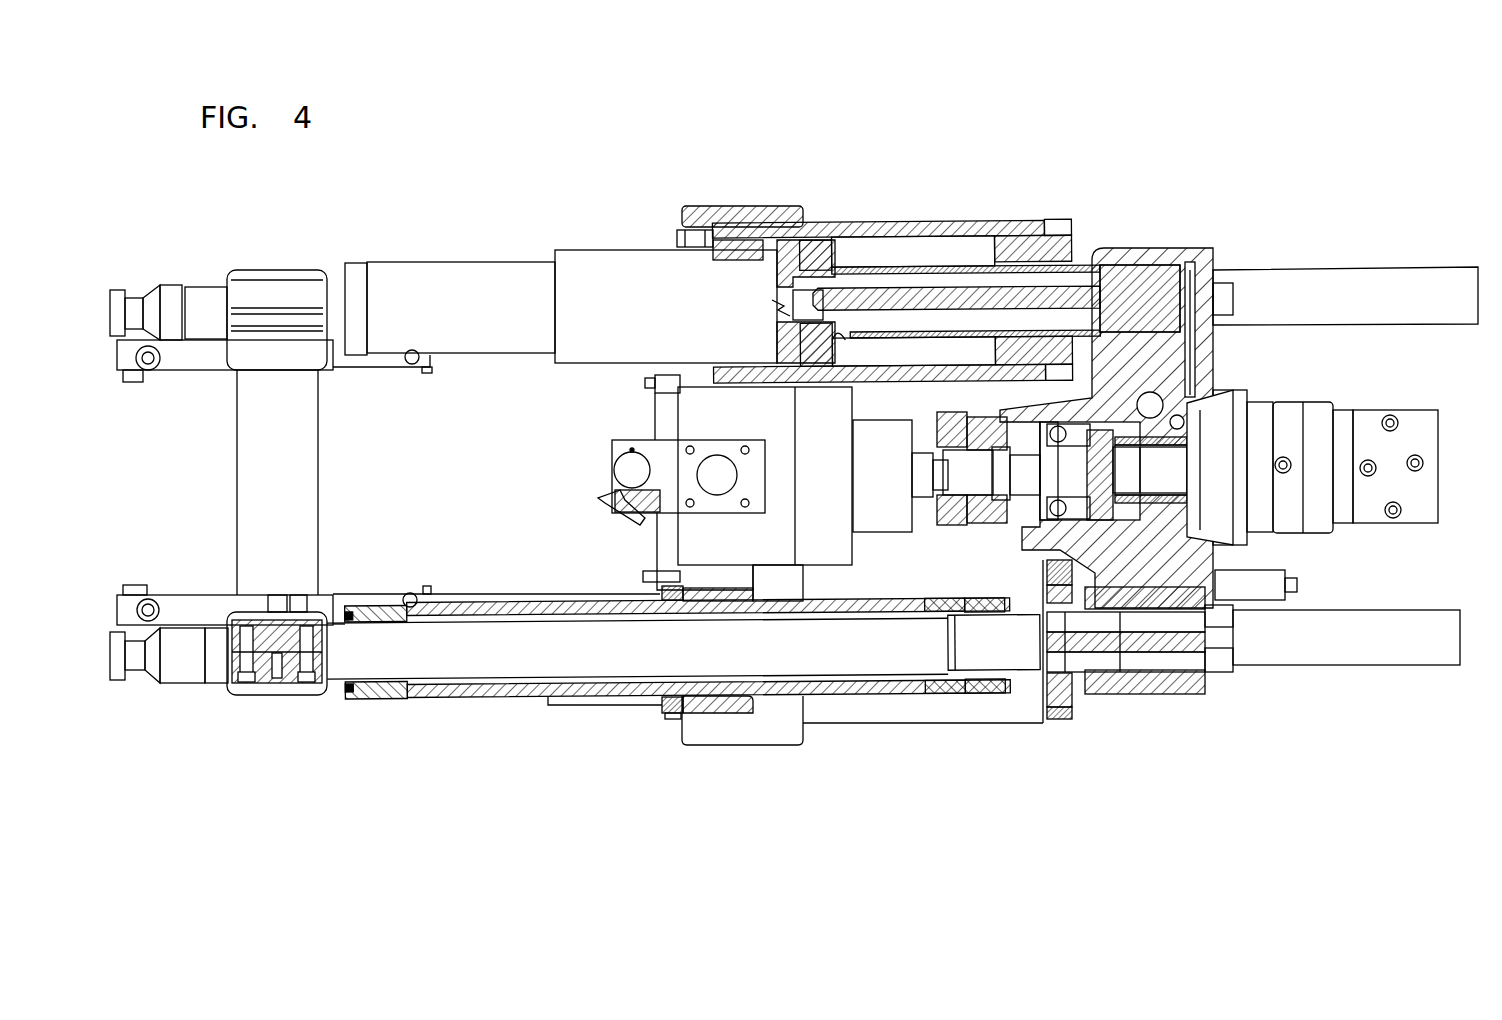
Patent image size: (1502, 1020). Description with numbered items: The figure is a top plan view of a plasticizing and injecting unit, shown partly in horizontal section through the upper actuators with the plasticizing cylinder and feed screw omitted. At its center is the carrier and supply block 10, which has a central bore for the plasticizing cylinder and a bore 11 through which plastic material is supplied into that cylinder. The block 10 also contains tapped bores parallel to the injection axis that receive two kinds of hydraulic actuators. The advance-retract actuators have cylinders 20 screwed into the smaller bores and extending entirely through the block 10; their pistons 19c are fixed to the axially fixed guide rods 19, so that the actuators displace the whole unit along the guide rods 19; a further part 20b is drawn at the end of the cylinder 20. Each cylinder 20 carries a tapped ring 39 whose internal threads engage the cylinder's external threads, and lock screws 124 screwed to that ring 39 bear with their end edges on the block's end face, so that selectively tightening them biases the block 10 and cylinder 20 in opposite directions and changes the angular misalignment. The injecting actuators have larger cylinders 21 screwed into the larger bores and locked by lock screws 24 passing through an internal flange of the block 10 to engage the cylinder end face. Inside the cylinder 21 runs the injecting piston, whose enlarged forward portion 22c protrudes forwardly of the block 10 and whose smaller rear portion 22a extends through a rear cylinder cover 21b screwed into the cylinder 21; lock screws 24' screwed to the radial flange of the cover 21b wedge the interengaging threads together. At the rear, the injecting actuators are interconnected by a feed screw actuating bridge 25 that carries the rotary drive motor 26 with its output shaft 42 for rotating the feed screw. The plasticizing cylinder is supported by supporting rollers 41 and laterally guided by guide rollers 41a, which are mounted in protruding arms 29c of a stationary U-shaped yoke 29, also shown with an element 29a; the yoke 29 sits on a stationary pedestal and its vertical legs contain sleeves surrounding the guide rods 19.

The carrier and supply block 10 is at (742, 195).
The bore 11 is at (717, 478).
The guide rods 19 is at (207, 298).
The pistons 19c is at (928, 700).
The cylinders 20 is at (426, 326).
The tube bushing 20b is at (357, 268).
The cylinders 21 is at (889, 226).
The rear cylinder cover 21b is at (1038, 243).
The rear portion of injecting piston 22a is at (962, 300).
The forward portion of injecting piston 22c is at (576, 754).
The lock screws 24 is at (679, 305).
The lock screws 24' is at (1088, 477).
The feed screw actuating bridge 25 is at (1174, 262).
The rotary drive motor 26 is at (1318, 420).
The stationary U-shaped yoke 29 is at (254, 484).
The clamp 29a is at (268, 288).
The protruding arms 29c is at (360, 358).
The tapped ring 39 is at (676, 720).
The supporting rollers 41 is at (132, 383).
The guide rollers 41a is at (160, 364).
The output shaft 42 is at (1010, 530).
The lock screws 124 is at (662, 592).